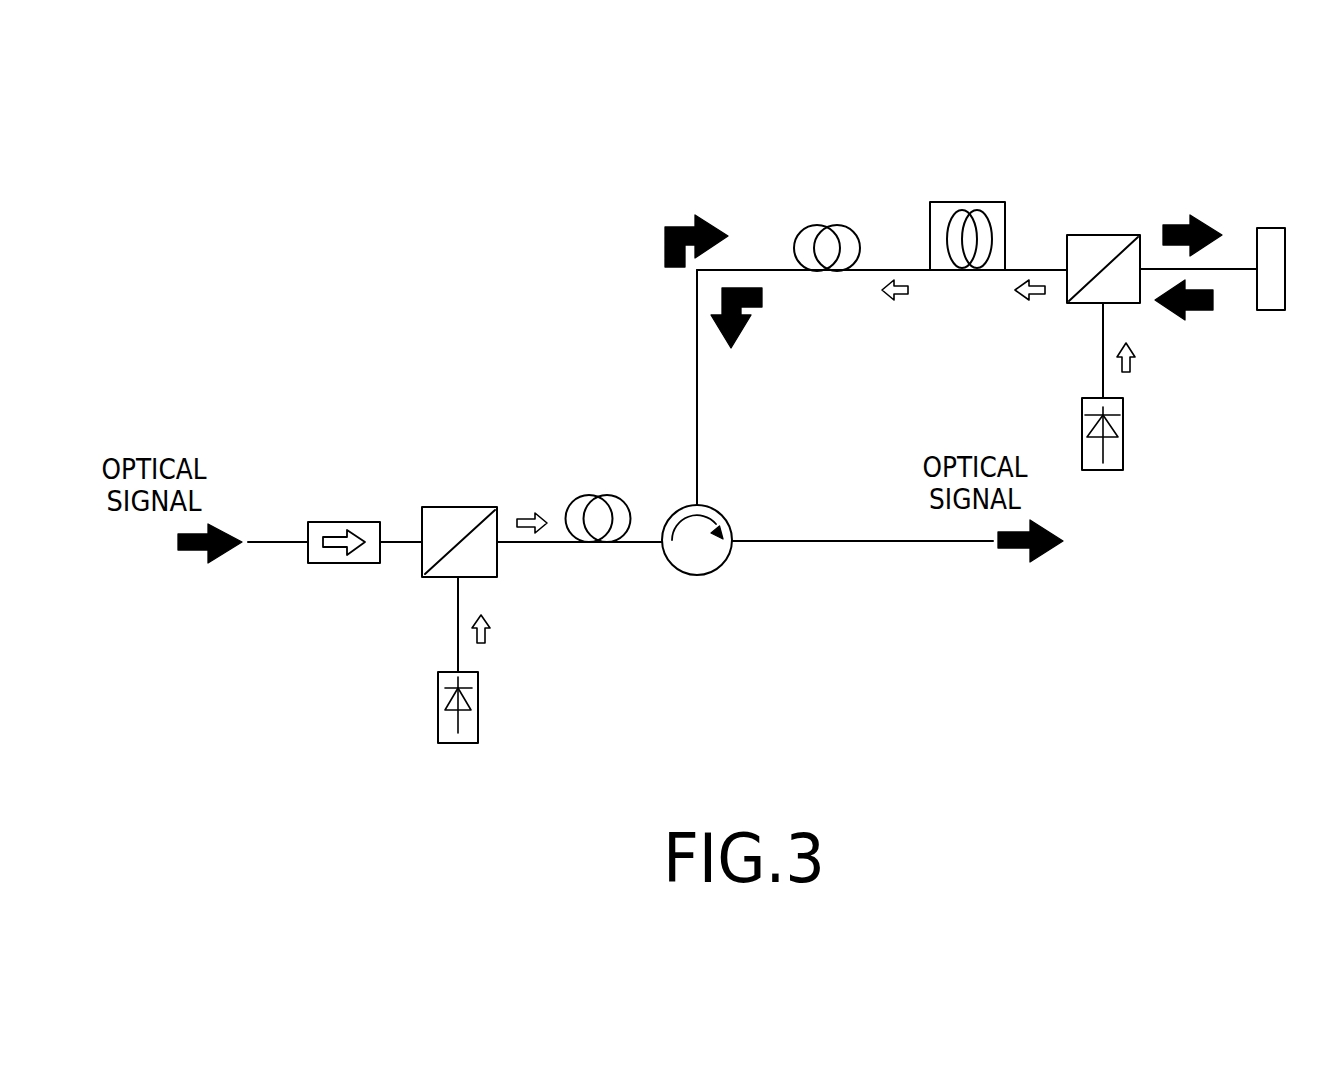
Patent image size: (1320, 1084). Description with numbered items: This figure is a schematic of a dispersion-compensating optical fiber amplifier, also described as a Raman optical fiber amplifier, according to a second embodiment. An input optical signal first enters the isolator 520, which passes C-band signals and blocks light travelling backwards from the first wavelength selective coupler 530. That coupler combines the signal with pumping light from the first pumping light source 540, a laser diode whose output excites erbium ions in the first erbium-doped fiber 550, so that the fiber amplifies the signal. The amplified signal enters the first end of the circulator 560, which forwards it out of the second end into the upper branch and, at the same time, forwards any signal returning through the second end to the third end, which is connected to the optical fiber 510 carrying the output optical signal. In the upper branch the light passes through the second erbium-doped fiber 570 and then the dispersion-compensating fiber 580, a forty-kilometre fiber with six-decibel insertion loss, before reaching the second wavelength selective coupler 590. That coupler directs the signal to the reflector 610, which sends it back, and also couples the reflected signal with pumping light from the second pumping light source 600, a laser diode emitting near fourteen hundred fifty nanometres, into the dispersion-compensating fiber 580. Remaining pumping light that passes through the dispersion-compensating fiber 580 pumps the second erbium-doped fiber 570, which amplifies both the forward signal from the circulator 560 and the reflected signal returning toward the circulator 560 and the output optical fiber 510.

The optical fiber 510 is at (278, 540).
The isolator 520 is at (342, 520).
The first wavelength selective coupler 530 is at (458, 505).
The first pumping light source 540 is at (478, 705).
The first erbium-doped fiber 550 is at (596, 495).
The circulator 560 is at (697, 576).
The second erbium-doped fiber 570 is at (825, 225).
The dispersion-compensating fiber 580 is at (965, 202).
The second wavelength selective coupler 590 is at (1103, 235).
The second pumping light source 600 is at (1123, 432).
The reflector 610 is at (1268, 228).